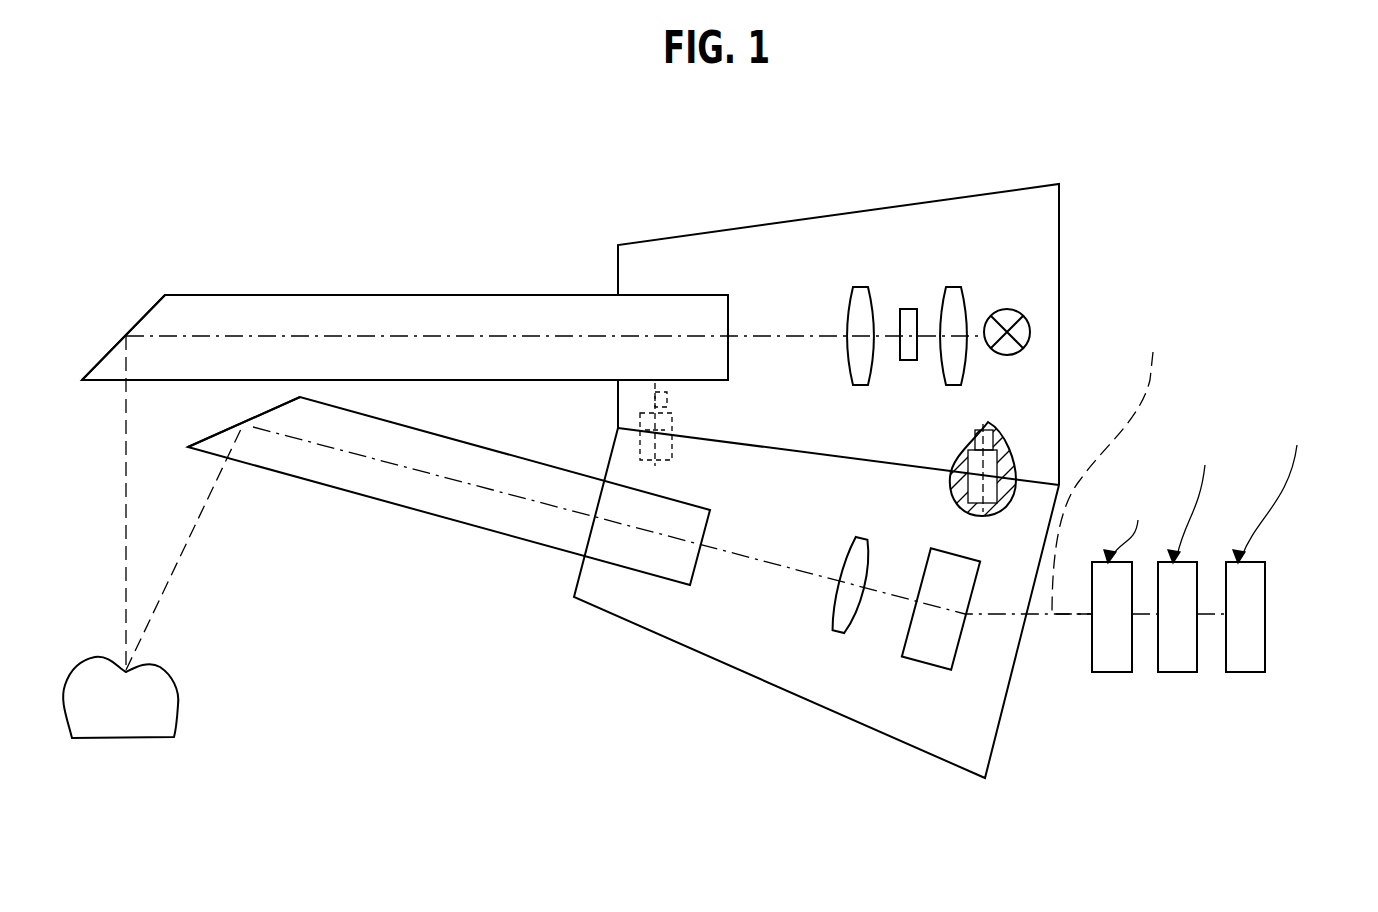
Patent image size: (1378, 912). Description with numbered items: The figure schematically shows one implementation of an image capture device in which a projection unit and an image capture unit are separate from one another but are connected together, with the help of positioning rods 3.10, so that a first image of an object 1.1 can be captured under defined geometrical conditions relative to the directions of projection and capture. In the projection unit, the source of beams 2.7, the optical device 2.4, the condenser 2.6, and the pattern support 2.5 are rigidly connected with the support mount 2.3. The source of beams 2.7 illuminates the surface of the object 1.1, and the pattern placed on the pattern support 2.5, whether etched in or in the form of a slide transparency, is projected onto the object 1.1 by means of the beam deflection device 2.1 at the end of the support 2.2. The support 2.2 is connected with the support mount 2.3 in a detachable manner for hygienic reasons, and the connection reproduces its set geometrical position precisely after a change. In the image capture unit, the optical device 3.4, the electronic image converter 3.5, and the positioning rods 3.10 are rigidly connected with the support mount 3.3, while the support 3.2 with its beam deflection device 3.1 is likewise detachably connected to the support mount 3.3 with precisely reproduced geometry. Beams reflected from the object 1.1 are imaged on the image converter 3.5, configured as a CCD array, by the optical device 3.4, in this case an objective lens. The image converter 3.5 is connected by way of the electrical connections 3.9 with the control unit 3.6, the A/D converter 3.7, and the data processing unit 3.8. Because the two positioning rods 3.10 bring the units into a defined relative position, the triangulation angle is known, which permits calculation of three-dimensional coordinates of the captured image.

The object 1.1 is at (160, 722).
The beam deflection device 2.1 is at (143, 313).
The support 2.2 is at (397, 293).
The support mount 2.3 is at (642, 267).
The optical device 2.4 is at (856, 300).
The pattern support 2.5 is at (908, 318).
The condenser 2.6 is at (953, 305).
The source of beams 2.7 is at (1008, 310).
The beam deflection device of image capture unit 3.1 is at (272, 403).
The support 3.2 is at (468, 505).
The support mount 3.3 is at (635, 590).
The optical device 3.4 is at (845, 617).
The electronic image converter 3.5 is at (932, 650).
The control unit 3.6 is at (1110, 660).
The A/D converter 3.7 is at (1180, 660).
The data processing unit 3.8 is at (1250, 660).
The electrical connections 3.9 is at (1110, 469).
The positioning rods 3.10 is at (1000, 460).